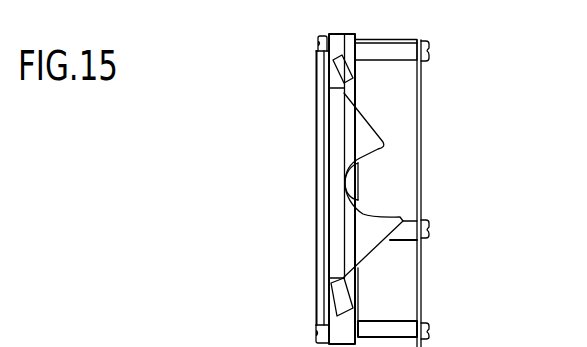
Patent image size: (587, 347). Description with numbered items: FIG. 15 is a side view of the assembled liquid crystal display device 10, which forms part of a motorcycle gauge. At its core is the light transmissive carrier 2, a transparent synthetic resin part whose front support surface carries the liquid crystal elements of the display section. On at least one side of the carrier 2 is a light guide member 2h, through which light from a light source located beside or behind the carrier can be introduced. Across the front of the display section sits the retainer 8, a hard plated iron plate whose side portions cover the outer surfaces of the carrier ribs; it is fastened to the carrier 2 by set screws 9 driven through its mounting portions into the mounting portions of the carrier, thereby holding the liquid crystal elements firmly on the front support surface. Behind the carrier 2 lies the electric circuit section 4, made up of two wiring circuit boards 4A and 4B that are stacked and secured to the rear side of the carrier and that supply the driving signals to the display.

The light transmissive carrier 2 is at (339, 46).
The light guide member 2h is at (347, 187).
The electric circuit section 4 is at (447, 189).
The wiring circuit board 4A is at (345, 93).
The wiring circuit board 4B is at (420, 128).
The retainer 8 is at (321, 176).
The set screws 9 is at (318, 50).
The liquid crystal display device 10 is at (422, 33).